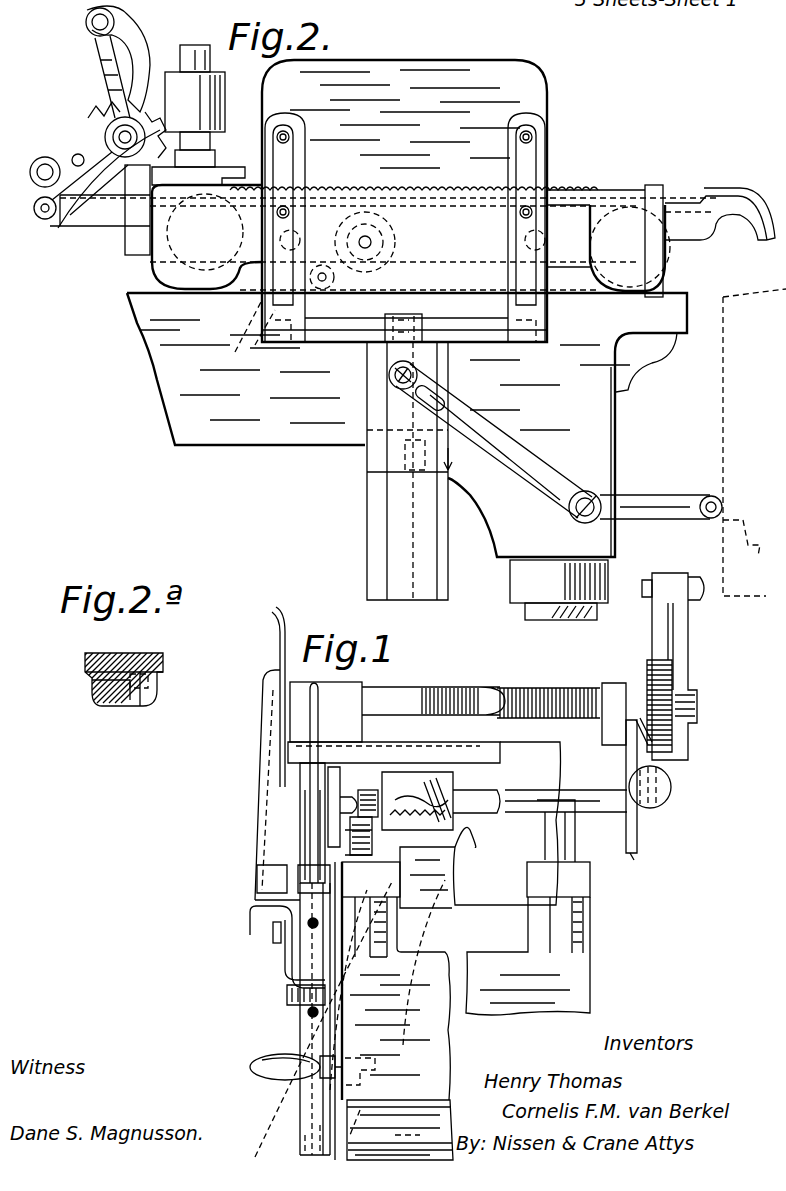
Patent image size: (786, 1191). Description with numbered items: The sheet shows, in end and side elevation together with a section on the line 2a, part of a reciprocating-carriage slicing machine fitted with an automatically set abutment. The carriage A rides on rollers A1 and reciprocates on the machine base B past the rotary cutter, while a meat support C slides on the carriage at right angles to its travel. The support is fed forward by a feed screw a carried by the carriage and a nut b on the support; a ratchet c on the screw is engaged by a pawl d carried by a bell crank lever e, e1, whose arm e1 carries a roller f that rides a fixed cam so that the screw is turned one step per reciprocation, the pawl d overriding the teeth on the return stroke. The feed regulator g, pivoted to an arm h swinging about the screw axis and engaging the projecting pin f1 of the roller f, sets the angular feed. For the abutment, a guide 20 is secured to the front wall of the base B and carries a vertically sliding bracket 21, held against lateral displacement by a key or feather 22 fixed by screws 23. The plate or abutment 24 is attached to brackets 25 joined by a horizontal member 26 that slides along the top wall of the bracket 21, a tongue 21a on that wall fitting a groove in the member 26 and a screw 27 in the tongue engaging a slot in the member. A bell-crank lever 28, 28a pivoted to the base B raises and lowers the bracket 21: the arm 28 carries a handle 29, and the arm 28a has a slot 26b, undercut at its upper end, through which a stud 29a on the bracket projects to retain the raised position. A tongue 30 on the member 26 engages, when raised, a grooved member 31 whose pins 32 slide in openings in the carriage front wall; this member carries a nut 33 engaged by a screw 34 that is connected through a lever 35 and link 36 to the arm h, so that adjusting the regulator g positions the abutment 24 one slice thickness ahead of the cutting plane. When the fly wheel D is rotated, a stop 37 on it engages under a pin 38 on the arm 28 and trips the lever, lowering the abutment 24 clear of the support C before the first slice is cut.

In FIG. 2, the guide 20 is at (440, 573).
In FIG. 2A, the guide 20 is at (120, 656).
In FIG. 1, the guide 20 is at (302, 1130).
In FIG. 2, the bracket 21 is at (367, 470).
In FIG. 2A, the bracket 21 is at (104, 705).
In FIG. 1, the bracket 21 is at (283, 940).
In FIG. 2, the tongue 21a is at (440, 354).
In FIG. 2, the key or feather 22 is at (485, 408).
In FIG. 2A, the key or feather 22 is at (140, 708).
In FIG. 2A, the screws 23 is at (158, 688).
In FIG. 1, the screws 23 is at (318, 1017).
In FIG. 2, the plate or abutment 24 is at (404, 201).
In FIG. 1, the plate or abutment 24 is at (278, 645).
In FIG. 2, the brackets 25 is at (290, 171).
In FIG. 1, the brackets 25 is at (263, 762).
In FIG. 1, the horizontal member 26 is at (270, 925).
In FIG. 2, the slot 26b is at (452, 394).
In FIG. 2, the screw 27 is at (378, 348).
In FIG. 2, the arm of bell-crank lever 28 is at (648, 503).
In FIG. 1, the arm of bell-crank lever 28 is at (330, 1080).
In FIG. 2, the arm of bell-crank lever 28a is at (562, 486).
In FIG. 1, the arm of bell-crank lever 28a is at (286, 996).
In FIG. 2, the handle 29 is at (702, 518).
In FIG. 1, the handle 29 is at (255, 1060).
In FIG. 2, the stud 29a is at (390, 380).
In FIG. 1, the stud 29a is at (290, 978).
In FIG. 2, the tongue 30 is at (250, 345).
In FIG. 1, the tongue 30 is at (310, 862).
In FIG. 2, the grooved member 31 is at (540, 183).
In FIG. 1, the grooved member 31 is at (313, 783).
In FIG. 2, the pins 32 is at (431, 228).
In FIG. 1, the pins 32 is at (337, 797).
In FIG. 2, the nut 33 is at (388, 222).
In FIG. 1, the nut 33 is at (392, 800).
In FIG. 1, the screw 34 is at (470, 770).
In FIG. 2, the lever 35 is at (353, 277).
In FIG. 1, the lever 35 is at (627, 855).
In FIG. 2, the link 36 is at (222, 285).
In FIG. 1, the link 36 is at (635, 862).
In FIG. 2, the stop 37 is at (741, 545).
In FIG. 1, the stop 37 is at (365, 1085).
In FIG. 1, the pin 38 is at (370, 1058).
In FIG. 2, the section line 2a is at (411, 446).
In FIG. 2, the feed screw a is at (105, 130).
In FIG. 1, the feed screw a is at (494, 690).
In FIG. 2, the nut b is at (150, 110).
In FIG. 2, the ratchet c is at (100, 104).
In FIG. 1, the ratchet c is at (647, 676).
In FIG. 2, the pawl d is at (135, 30).
In FIG. 1, the pawl d is at (652, 618).
In FIG. 2, the bell crank lever e is at (100, 55).
In FIG. 2, the arm of bell crank lever e1 is at (105, 212).
In FIG. 2, the roller f is at (42, 188).
In FIG. 2, the projecting pin f1 is at (46, 220).
In FIG. 2, the feed regulator g is at (716, 206).
In FIG. 1, the feed regulator g is at (660, 808).
In FIG. 2, the arm h is at (76, 225).
In FIG. 1, the arm h is at (632, 735).
In FIG. 2, the carriage A is at (580, 258).
In FIG. 1, the carriage A is at (482, 838).
In FIG. 2, the rollers A1 is at (150, 275).
In FIG. 1, the rollers A1 is at (466, 848).
In FIG. 2, the machine base B is at (552, 422).
In FIG. 1, the machine base B is at (478, 960).
In FIG. 2, the meat support C is at (225, 168).
In FIG. 2, the fly wheel D is at (754, 442).
In FIG. 1, the fly wheel D is at (385, 1127).